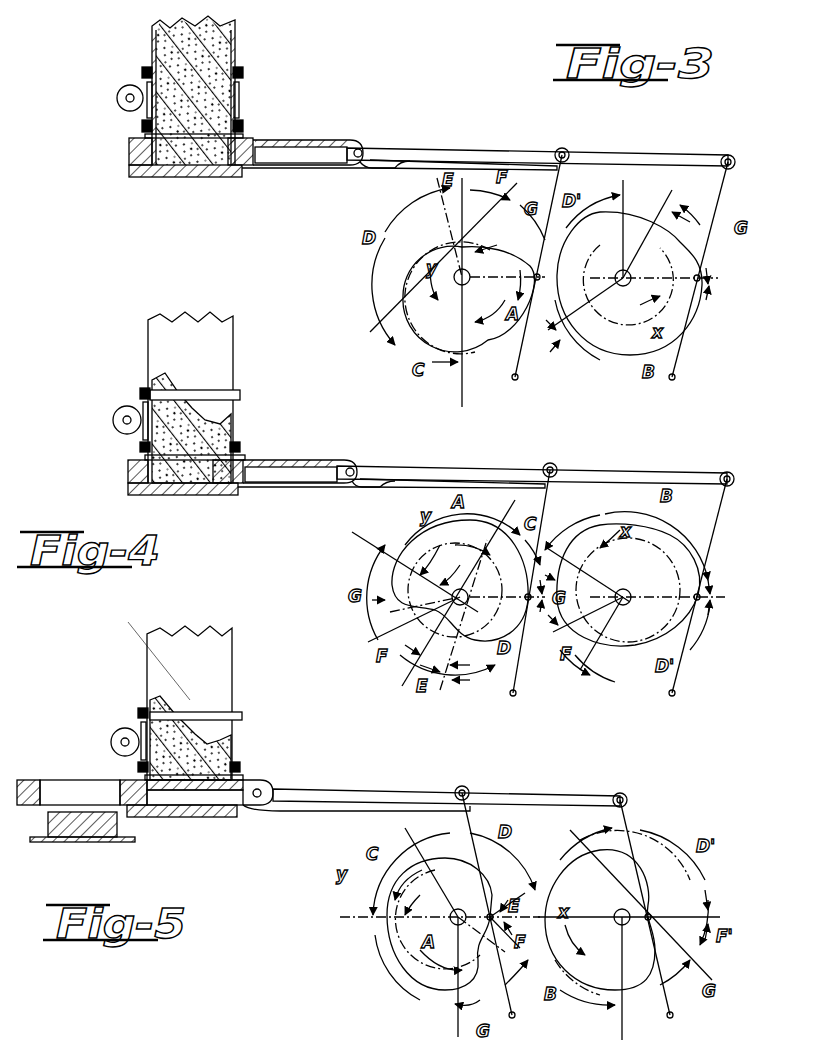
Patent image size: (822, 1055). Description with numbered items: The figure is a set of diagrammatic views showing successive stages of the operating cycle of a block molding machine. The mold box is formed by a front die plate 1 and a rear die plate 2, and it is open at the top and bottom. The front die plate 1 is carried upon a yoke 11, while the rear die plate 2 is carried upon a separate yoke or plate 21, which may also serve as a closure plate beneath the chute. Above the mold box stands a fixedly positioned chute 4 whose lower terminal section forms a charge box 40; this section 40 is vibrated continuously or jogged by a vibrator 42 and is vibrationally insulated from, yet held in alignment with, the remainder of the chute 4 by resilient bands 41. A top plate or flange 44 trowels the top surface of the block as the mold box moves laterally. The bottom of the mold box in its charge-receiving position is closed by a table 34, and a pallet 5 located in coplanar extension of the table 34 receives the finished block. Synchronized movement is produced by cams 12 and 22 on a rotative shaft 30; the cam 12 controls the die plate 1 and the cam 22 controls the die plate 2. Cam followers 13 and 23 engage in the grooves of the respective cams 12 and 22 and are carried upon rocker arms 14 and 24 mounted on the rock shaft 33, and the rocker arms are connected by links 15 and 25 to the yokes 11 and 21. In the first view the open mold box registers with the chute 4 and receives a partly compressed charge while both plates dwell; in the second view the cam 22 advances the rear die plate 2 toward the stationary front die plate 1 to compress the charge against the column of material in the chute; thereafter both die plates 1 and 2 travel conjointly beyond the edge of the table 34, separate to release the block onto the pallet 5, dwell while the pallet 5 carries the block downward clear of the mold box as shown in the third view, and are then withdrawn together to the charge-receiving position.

In FIG. 3, the front die plate 1 is at (130, 158).
In FIG. 4, the front die plate 1 is at (130, 463).
In FIG. 5, the front die plate 1 is at (30, 780).
In FIG. 3, the rear die plate 2 is at (246, 150).
In FIG. 4, the rear die plate 2 is at (246, 474).
In FIG. 5, the rear die plate 2 is at (120, 790).
In FIG. 3, the chute 4 is at (238, 40).
In FIG. 4, the chute 4 is at (228, 346).
In FIG. 5, the chute 4 is at (225, 690).
In FIG. 5, the pallet 5 is at (55, 838).
In FIG. 3, the yoke 11 is at (136, 140).
In FIG. 4, the yoke 11 is at (128, 476).
In FIG. 5, the yoke 11 is at (58, 782).
In FIG. 3, the cam 12 is at (590, 352).
In FIG. 4, the cam 12 is at (680, 637).
In FIG. 5, the cam 12 is at (604, 990).
In FIG. 3, the cam follower 13 is at (702, 283).
In FIG. 4, the cam follower 13 is at (696, 593).
In FIG. 5, the cam follower 13 is at (652, 914).
In FIG. 3, the rocker arm 14 is at (732, 182).
In FIG. 4, the rocker arm 14 is at (730, 497).
In FIG. 5, the rocker arm 14 is at (628, 817).
In FIG. 3, the link 15 is at (406, 170).
In FIG. 4, the link 15 is at (410, 488).
In FIG. 5, the link 15 is at (516, 797).
In FIG. 3, the yoke or plate 21 is at (306, 142).
In FIG. 4, the yoke or plate 21 is at (318, 461).
In FIG. 5, the yoke or plate 21 is at (246, 782).
In FIG. 3, the cam 22 is at (488, 345).
In FIG. 4, the cam 22 is at (360, 535).
In FIG. 5, the cam 22 is at (388, 940).
In FIG. 3, the cam follower 23 is at (533, 276).
In FIG. 4, the cam follower 23 is at (526, 596).
In FIG. 5, the cam follower 23 is at (488, 914).
In FIG. 3, the rocker arm 24 is at (558, 178).
In FIG. 4, the rocker arm 24 is at (549, 494).
In FIG. 5, the rocker arm 24 is at (462, 818).
In FIG. 3, the link 25 is at (428, 150).
In FIG. 4, the link 25 is at (413, 470).
In FIG. 5, the link 25 is at (342, 792).
In FIG. 3, the rotative shaft 30 is at (468, 285).
In FIG. 4, the rotative shaft 30 is at (460, 588).
In FIG. 5, the rotative shaft 30 is at (455, 914).
In FIG. 3, the rock shaft 33 is at (516, 381).
In FIG. 4, the rock shaft 33 is at (517, 694).
In FIG. 5, the rock shaft 33 is at (514, 1018).
In FIG. 3, the table 34 is at (205, 178).
In FIG. 4, the table 34 is at (202, 496).
In FIG. 5, the table 34 is at (197, 820).
In FIG. 3, the charge box or lower terminal section 40 is at (236, 96).
In FIG. 4, the charge box or lower terminal section 40 is at (232, 428).
In FIG. 5, the charge box or lower terminal section 40 is at (222, 732).
In FIG. 3, the resilient bands 41 is at (242, 124).
In FIG. 4, the resilient bands 41 is at (242, 446).
In FIG. 5, the resilient bands 41 is at (238, 714).
In FIG. 3, the vibrator 42 is at (122, 90).
In FIG. 4, the vibrator 42 is at (118, 412).
In FIG. 5, the vibrator 42 is at (118, 732).
In FIG. 3, the top plate or flange 44 is at (142, 136).
In FIG. 4, the top plate or flange 44 is at (136, 455).
In FIG. 5, the top plate or flange 44 is at (138, 775).